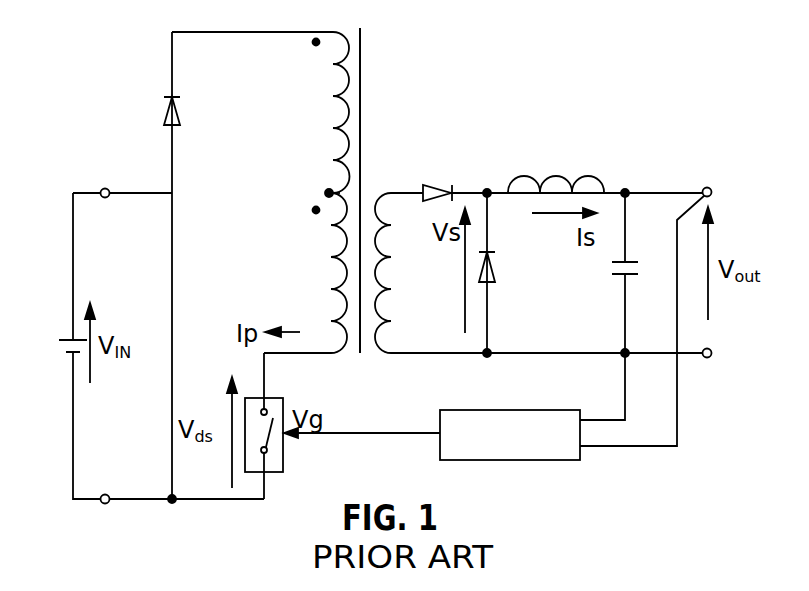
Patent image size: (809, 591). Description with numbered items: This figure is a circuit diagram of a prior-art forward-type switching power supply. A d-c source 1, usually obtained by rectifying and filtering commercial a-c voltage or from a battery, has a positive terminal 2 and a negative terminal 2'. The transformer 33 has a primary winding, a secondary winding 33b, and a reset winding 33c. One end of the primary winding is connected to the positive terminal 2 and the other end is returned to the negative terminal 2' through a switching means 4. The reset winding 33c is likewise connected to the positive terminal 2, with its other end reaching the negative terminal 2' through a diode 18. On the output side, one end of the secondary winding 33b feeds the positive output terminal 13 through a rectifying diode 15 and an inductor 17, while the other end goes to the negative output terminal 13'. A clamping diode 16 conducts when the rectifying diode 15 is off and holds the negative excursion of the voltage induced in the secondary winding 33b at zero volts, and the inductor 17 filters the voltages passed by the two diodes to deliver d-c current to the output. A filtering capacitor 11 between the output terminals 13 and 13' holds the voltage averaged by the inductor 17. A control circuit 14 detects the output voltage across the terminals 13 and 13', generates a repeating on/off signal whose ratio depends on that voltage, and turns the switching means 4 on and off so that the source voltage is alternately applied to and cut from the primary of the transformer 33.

The d-c source 1 is at (66, 346).
The positive terminal of the d-c source 2 is at (97, 174).
The negative terminal of the d-c source 2' is at (99, 526).
The switching means 4 is at (284, 458).
The filtering capacitor 11 is at (612, 273).
The positive terminal of the d-c output 13 is at (714, 166).
The negative terminal of the d-c output 13' is at (725, 378).
The control circuit 14 is at (535, 462).
The rectifying diode 15 is at (430, 189).
The clamping diode 16 is at (495, 273).
The inductor 17 is at (555, 175).
The diode 18 is at (177, 112).
The transformer 33 is at (362, 100).
The secondary winding 33b is at (388, 302).
The reset winding 33c is at (330, 115).